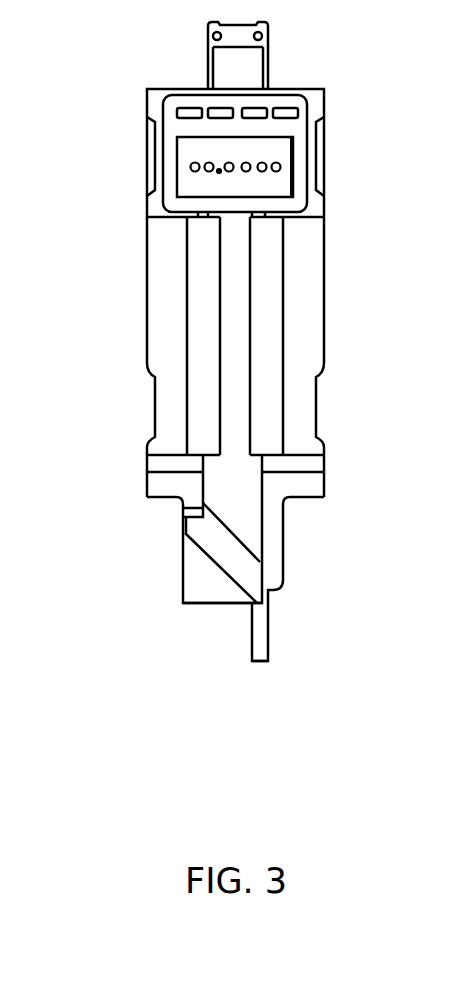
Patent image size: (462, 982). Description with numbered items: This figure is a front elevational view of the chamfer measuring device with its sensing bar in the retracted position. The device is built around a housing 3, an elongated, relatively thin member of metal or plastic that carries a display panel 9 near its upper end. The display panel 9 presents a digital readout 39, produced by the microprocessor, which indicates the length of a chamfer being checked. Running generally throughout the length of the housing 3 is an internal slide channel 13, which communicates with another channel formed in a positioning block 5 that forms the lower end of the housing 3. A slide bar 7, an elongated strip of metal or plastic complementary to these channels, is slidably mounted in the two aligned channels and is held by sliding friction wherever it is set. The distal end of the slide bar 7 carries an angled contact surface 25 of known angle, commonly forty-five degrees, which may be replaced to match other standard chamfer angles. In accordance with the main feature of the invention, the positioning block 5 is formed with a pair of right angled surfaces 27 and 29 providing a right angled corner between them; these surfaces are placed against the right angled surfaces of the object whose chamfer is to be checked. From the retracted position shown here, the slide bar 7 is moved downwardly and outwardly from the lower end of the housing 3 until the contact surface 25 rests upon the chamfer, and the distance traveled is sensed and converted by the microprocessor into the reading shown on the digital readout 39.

The housing 3 is at (324, 272).
The display panel 9 is at (297, 131).
The digital readout 39 is at (195, 168).
The slide channel 13 is at (220, 305).
The slide bar 7 is at (228, 401).
The positioning block 5 is at (324, 484).
The angled contact surface 25 is at (217, 563).
The right angled surface 27 is at (203, 605).
The right angled surface 29 is at (252, 642).